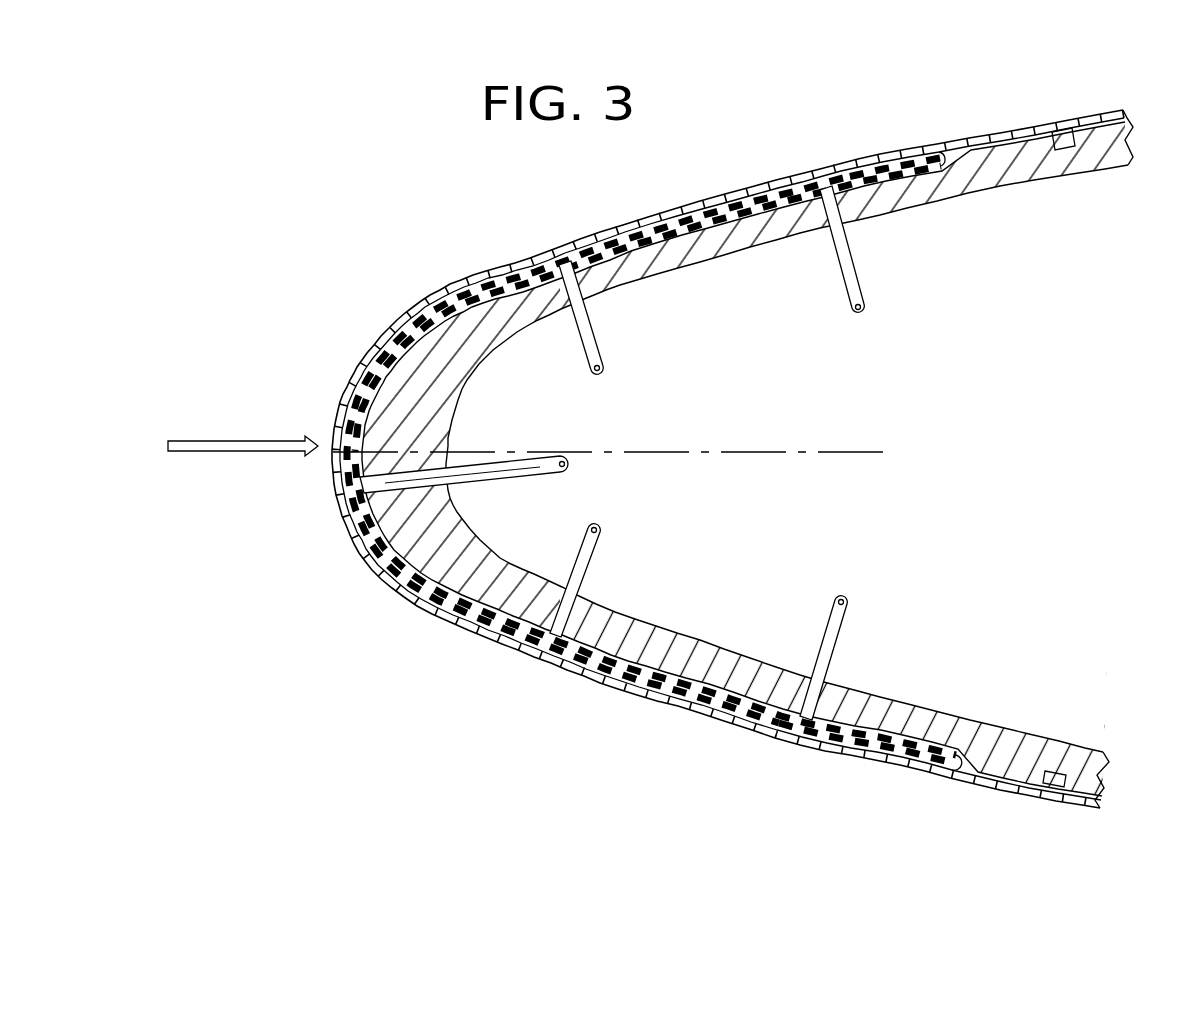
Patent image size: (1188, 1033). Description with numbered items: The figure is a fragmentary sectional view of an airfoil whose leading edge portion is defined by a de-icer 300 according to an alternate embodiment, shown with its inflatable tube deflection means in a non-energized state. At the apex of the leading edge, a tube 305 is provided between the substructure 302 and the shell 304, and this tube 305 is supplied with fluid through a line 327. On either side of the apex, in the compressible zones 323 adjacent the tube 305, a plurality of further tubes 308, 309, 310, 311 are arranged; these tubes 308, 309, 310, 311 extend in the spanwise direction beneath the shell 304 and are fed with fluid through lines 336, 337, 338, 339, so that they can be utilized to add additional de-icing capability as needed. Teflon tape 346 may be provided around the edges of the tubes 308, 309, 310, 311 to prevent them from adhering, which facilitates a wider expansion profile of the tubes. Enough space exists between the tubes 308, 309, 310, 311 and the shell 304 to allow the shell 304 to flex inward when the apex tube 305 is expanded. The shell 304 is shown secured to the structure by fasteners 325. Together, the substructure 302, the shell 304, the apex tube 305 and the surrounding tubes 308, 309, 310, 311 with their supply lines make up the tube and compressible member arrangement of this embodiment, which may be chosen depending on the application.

The de-icer 300 is at (712, 469).
The substructure 302 is at (1040, 740).
The shell 304 is at (1092, 814).
The tube 305 is at (340, 387).
The tube 308 is at (787, 717).
The tube 309 is at (505, 627).
The tube 310 is at (480, 280).
The tube 311 is at (880, 153).
The compressible zones 323 is at (430, 587).
The fasteners 325 is at (1062, 118).
The line 327 is at (540, 460).
The line 336 is at (840, 620).
The line 337 is at (592, 555).
The line 338 is at (597, 350).
The line 339 is at (858, 282).
The teflon tape 346 is at (950, 150).